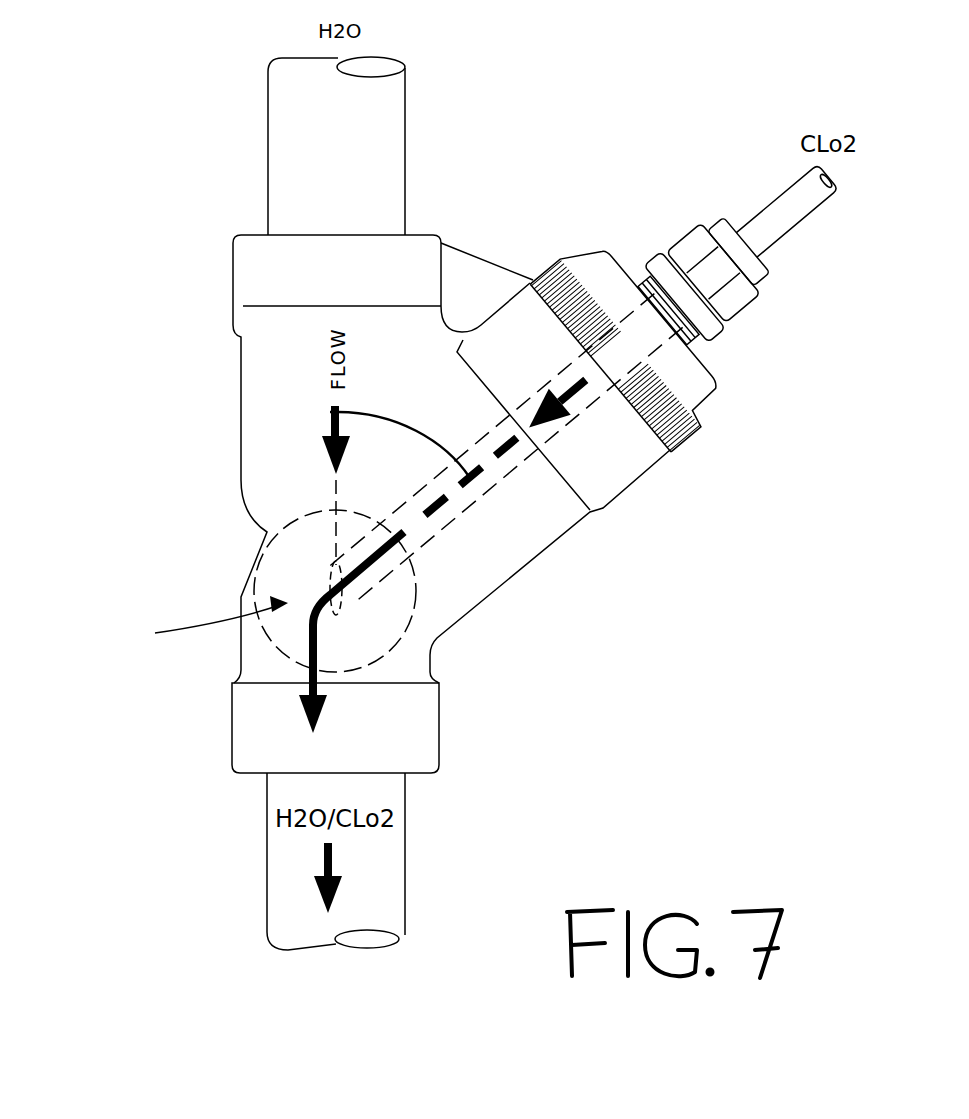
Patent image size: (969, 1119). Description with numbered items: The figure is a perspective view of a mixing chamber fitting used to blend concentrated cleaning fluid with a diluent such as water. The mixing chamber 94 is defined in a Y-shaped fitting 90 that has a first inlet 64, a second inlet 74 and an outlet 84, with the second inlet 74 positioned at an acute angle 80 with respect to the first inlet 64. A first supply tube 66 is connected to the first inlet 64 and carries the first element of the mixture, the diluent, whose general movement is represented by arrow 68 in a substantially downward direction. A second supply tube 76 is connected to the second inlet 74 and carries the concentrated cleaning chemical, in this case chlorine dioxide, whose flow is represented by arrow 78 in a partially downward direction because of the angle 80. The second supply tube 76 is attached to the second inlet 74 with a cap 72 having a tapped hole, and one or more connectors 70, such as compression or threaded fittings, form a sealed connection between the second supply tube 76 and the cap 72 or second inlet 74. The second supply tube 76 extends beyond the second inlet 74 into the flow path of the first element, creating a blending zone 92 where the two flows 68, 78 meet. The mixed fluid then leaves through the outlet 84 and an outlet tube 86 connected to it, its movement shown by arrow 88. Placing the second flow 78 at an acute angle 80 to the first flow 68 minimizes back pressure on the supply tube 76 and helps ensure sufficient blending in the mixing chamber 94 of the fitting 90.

The first inlet 64 is at (332, 235).
The first supply tube 66 is at (268, 122).
The arrow representing flow of the first element 68 is at (322, 452).
The connectors 70 is at (647, 262).
The cap 72 is at (690, 413).
The second inlet 74 is at (603, 365).
The second supply tube 76 is at (771, 202).
The arrow representing flow of the second element 78 is at (527, 428).
The angle 80 is at (400, 417).
The outlet 84 is at (335, 772).
The outlet tube 86 is at (385, 843).
The arrow representing flow of the mixed fluid 88 is at (323, 855).
The Y-shaped fitting 90 is at (278, 392).
The blending zone 92 is at (258, 568).
The mixing chamber 94 is at (201, 626).